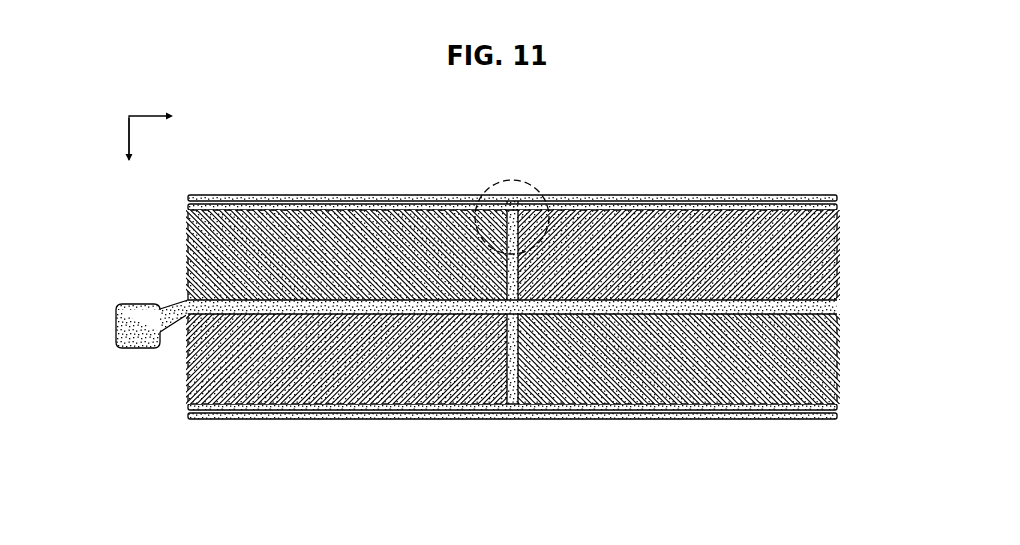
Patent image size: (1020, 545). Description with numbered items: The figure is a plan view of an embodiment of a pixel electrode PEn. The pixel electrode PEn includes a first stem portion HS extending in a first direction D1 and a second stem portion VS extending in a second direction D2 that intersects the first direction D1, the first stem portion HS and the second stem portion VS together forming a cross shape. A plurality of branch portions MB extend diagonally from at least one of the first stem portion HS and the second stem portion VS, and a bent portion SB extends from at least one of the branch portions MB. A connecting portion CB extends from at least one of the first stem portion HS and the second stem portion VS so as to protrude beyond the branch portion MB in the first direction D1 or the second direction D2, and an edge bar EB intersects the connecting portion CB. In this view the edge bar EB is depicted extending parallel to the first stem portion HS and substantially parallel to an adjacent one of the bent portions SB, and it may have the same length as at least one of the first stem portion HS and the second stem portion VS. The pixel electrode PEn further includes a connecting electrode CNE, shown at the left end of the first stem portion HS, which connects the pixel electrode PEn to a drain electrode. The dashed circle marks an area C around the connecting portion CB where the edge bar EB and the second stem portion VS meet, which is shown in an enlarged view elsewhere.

The pixel electrode PEn is at (260, 160).
The connecting electrode CNE is at (133, 304).
The edge bar EB is at (838, 198).
The bent portion SB is at (838, 207).
The branch portions MB is at (838, 245).
The first stem portion HS is at (838, 307).
The second stem portion VS is at (512, 421).
The connecting portion CB is at (518, 201).
The area C is at (536, 180).
The first direction D1 is at (162, 134).
The second direction D2 is at (130, 150).